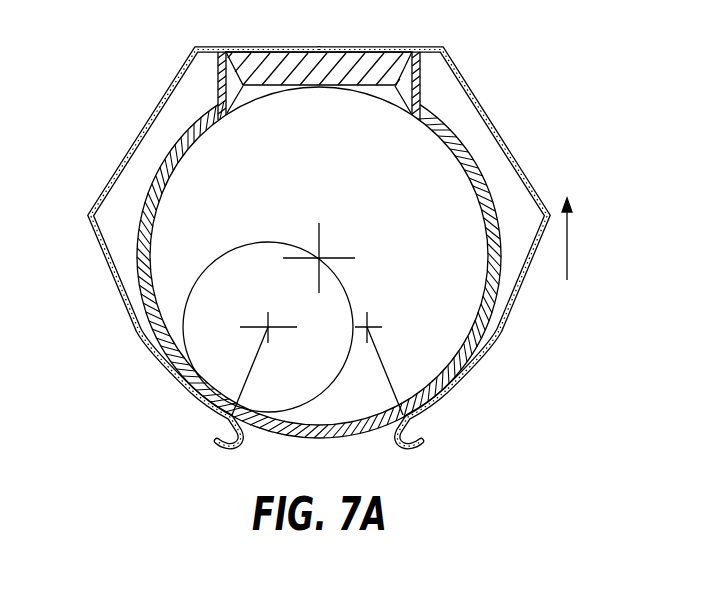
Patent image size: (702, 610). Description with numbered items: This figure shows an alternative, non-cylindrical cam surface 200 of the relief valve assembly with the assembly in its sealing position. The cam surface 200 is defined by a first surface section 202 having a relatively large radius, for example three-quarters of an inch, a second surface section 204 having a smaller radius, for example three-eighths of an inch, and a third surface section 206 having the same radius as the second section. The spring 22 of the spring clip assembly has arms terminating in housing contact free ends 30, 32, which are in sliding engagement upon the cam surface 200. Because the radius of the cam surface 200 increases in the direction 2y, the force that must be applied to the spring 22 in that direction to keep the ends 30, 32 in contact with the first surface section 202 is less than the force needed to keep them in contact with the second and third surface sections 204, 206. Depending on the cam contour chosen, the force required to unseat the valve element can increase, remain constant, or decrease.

The spring 22 is at (505, 331).
The housing contact free end 30 is at (208, 443).
The housing contact free end 32 is at (433, 445).
The cam surface 200 is at (157, 177).
The first surface section 202 is at (481, 178).
The second surface section 204 is at (218, 392).
The third surface section 206 is at (420, 392).
The direction 2y is at (588, 239).